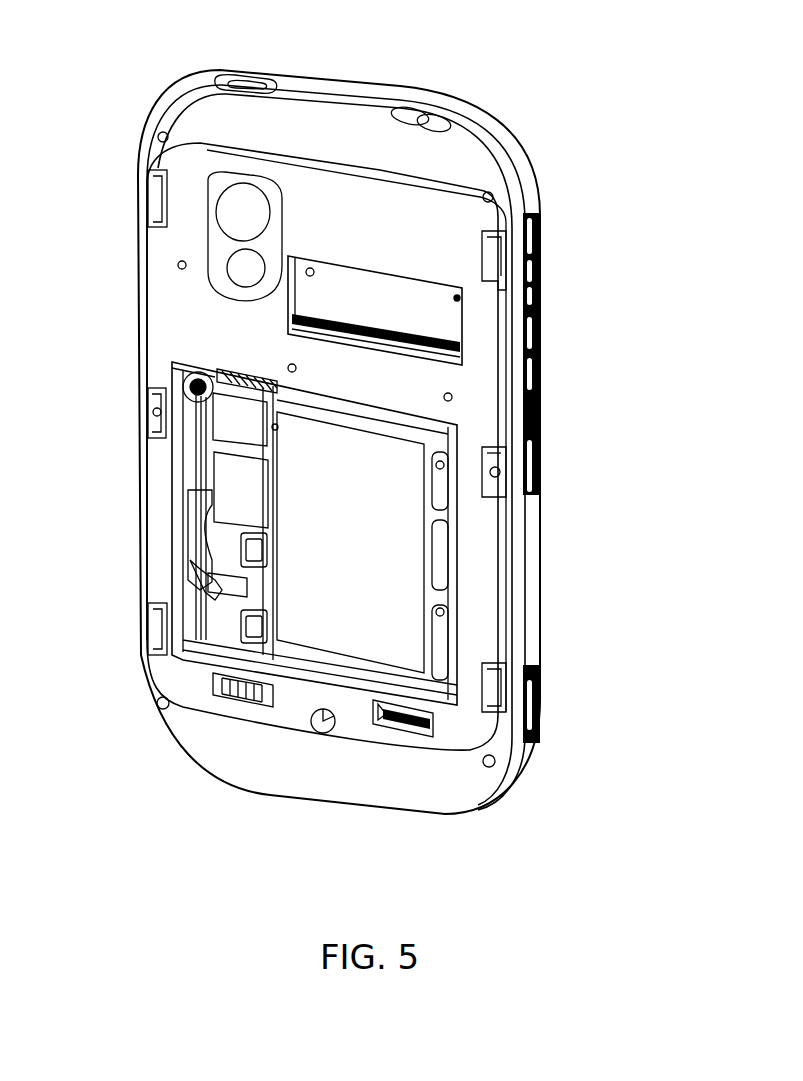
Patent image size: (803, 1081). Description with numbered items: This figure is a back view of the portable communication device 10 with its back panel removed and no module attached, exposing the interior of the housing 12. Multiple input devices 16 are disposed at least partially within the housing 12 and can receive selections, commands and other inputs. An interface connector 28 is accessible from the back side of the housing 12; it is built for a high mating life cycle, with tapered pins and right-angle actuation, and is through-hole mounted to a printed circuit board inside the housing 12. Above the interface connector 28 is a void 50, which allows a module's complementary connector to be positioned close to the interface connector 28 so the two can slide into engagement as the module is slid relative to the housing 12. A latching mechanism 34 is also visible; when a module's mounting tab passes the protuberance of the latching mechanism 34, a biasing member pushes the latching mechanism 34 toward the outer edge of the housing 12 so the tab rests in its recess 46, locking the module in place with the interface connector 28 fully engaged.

The portable communication device 10 is at (143, 76).
The housing 12 is at (525, 148).
The input device 16 is at (530, 234).
The interface connector 28 is at (447, 337).
The latching mechanism 34 is at (539, 698).
The recess 46 is at (240, 680).
The void 50 is at (440, 317).